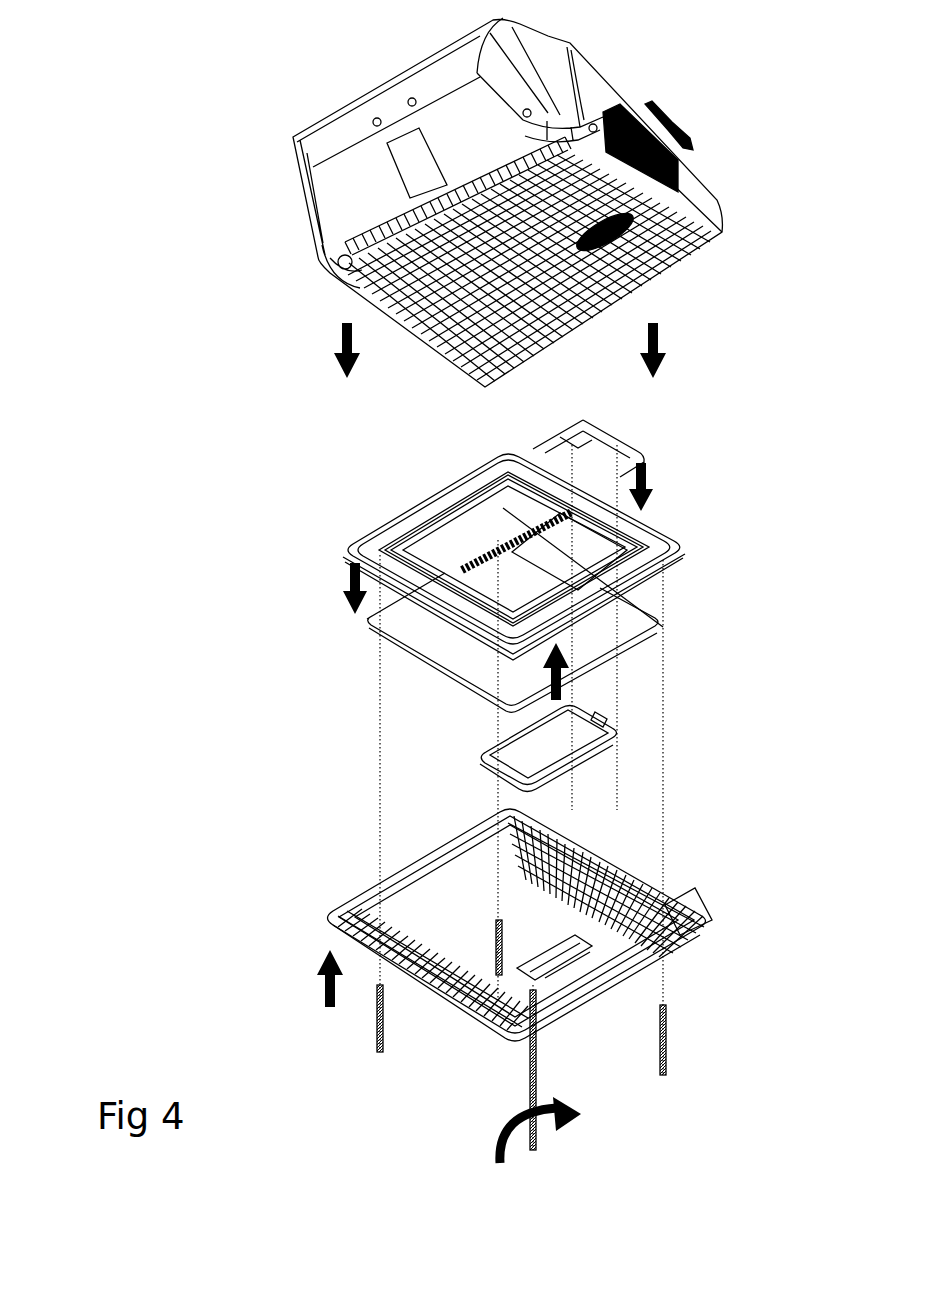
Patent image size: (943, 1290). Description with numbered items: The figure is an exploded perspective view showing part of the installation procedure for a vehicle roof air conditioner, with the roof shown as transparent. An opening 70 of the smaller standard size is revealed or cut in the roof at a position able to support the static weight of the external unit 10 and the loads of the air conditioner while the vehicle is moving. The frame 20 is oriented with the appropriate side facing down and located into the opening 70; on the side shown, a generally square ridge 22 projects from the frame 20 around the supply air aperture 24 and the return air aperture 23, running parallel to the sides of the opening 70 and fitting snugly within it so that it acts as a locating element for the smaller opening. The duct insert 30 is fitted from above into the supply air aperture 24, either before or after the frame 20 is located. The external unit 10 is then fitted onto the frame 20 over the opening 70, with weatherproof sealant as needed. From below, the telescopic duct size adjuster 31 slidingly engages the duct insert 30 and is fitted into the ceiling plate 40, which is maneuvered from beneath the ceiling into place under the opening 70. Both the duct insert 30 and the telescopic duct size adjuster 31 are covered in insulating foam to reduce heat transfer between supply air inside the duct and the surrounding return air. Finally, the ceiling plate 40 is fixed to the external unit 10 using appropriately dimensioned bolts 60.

The external unit 10 is at (340, 108).
The frame 20 is at (670, 557).
The ridge 22 is at (400, 528).
The return air aperture 23 is at (470, 525).
The supply air aperture 24 is at (583, 548).
The duct insert 30 is at (618, 453).
The telescopic duct size adjuster 31 is at (607, 723).
The ceiling plate 40 is at (627, 872).
The bolts 60 is at (497, 957).
The opening 70 is at (367, 632).